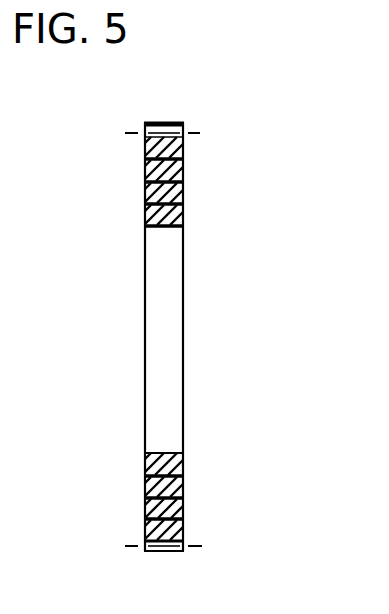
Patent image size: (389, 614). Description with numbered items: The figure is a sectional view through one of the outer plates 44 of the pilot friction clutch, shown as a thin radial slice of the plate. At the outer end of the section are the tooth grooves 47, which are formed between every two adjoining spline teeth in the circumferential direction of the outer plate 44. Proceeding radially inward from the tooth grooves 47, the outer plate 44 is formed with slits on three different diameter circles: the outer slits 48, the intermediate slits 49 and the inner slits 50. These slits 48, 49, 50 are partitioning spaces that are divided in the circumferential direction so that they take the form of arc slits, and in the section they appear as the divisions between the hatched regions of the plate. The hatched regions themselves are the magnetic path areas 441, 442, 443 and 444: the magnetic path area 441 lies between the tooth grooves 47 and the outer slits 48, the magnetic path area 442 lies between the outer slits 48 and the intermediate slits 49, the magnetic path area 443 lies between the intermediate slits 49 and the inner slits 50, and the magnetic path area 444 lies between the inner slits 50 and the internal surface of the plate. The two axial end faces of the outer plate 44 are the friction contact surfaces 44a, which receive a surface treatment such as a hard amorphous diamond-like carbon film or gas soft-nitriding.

The outer plate 44 is at (177, 125).
The friction contact surface 44a is at (146, 460).
The tooth groove 47 is at (158, 122).
The outer slit 48 is at (184, 158).
The intermediate slit 49 is at (184, 182).
The inner slit 50 is at (184, 205).
The magnetic path area 441 is at (146, 141).
The magnetic path area 442 is at (146, 166).
The magnetic path area 443 is at (146, 188).
The magnetic path area 444 is at (146, 212).